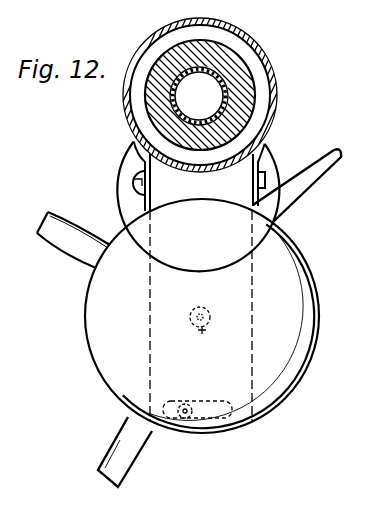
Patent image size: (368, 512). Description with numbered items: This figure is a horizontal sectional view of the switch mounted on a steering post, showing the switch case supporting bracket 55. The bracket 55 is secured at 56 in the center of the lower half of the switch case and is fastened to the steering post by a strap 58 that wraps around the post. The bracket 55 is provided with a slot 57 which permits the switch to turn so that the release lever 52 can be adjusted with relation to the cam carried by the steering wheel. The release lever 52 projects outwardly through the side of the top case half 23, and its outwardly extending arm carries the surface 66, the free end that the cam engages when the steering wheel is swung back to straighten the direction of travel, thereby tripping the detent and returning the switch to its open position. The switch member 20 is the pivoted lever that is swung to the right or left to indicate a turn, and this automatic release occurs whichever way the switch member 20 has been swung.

The strap 58 is at (282, 100).
The surface 66 is at (293, 155).
The release lever 52 is at (292, 187).
The bracket 55 is at (150, 205).
The switch member 20 is at (92, 263).
The securing point 56 is at (203, 333).
The slot 57 is at (211, 402).
The case half 23 is at (276, 382).